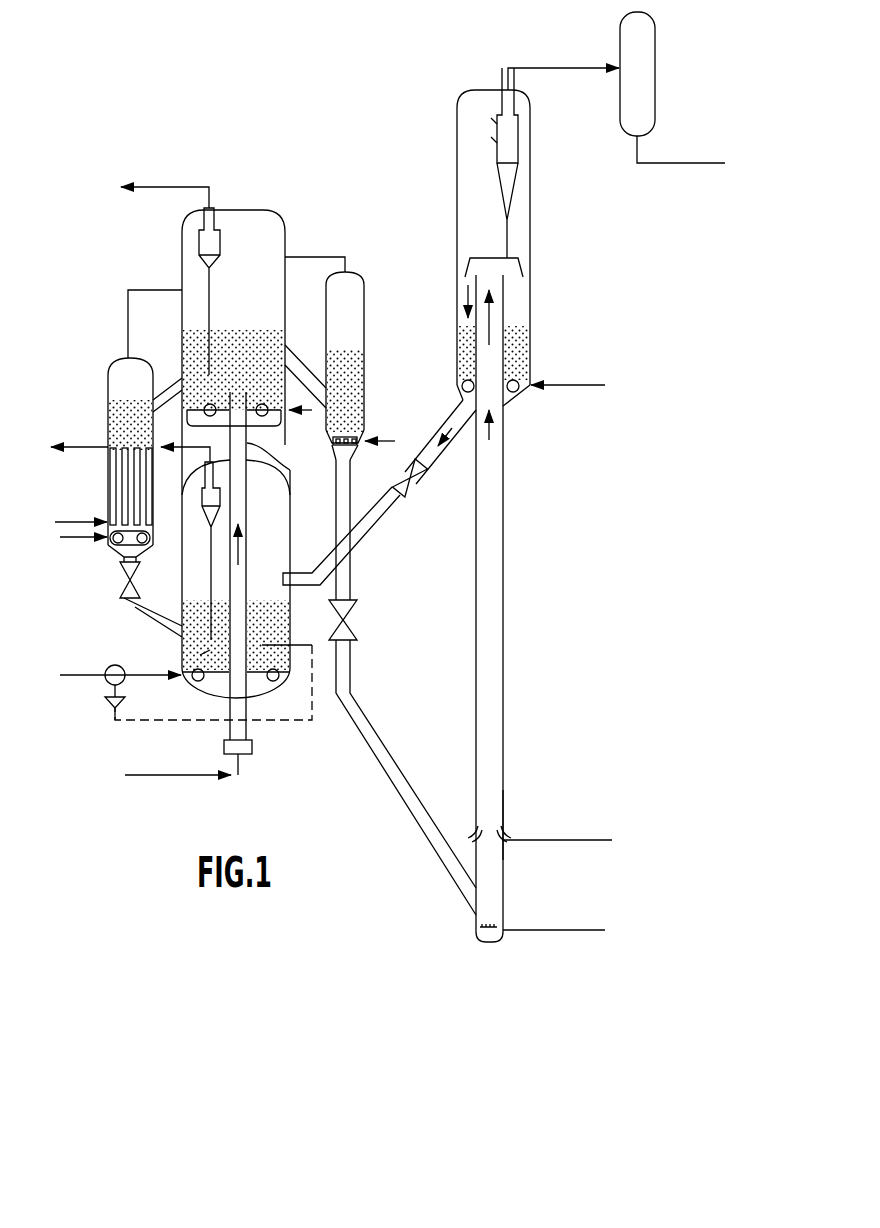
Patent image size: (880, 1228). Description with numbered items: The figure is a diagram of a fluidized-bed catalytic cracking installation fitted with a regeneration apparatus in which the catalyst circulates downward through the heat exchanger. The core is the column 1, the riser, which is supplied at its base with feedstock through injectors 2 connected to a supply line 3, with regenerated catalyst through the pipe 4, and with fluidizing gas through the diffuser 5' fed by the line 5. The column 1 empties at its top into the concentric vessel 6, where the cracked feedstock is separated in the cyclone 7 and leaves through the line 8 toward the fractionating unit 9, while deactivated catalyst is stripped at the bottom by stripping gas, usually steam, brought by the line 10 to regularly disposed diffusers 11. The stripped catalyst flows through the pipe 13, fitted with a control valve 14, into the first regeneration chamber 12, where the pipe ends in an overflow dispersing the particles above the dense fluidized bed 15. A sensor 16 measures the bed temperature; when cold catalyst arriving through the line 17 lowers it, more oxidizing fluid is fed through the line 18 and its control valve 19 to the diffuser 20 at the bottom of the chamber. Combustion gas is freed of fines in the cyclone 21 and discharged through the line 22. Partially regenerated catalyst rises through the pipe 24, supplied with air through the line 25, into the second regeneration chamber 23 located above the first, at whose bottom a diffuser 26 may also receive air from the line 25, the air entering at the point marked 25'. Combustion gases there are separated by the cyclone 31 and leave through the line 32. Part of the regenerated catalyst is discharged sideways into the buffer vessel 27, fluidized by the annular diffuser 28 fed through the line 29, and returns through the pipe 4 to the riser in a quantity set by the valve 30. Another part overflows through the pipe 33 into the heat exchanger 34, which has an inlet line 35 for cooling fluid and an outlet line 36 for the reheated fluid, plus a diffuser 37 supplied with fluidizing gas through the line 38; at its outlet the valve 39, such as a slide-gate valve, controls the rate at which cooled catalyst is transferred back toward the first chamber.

The column 1 is at (503, 577).
The injectors 2 is at (522, 821).
The supply line 3 is at (568, 842).
The pipe 4 is at (428, 832).
The line 5 is at (554, 909).
The diffuser 5' is at (504, 953).
The vessel 6 is at (530, 282).
The cyclone 7 is at (518, 140).
The line 8 is at (579, 67).
The fractionating unit 9 is at (655, 75).
The line 10 is at (565, 388).
The diffusers 11 is at (518, 370).
The first regeneration chamber 12 is at (290, 540).
The pipe 13 is at (458, 436).
The control valve 14 is at (412, 486).
The dense fluidized bed 15 is at (200, 657).
The sensor 16 is at (302, 645).
The line 17 is at (148, 611).
The line 18 is at (140, 677).
The control valve 19 is at (107, 688).
The diffuser 20 is at (296, 680).
The cyclone 21 is at (202, 496).
The line 22 is at (200, 450).
The second regeneration chamber 23 is at (287, 306).
The pipe 24 is at (290, 470).
The line 25 is at (188, 603).
The gas inlet 25' is at (312, 432).
The diffuser 26 is at (292, 388).
The buffer vessel 27 is at (364, 370).
The annular diffuser 28 is at (358, 425).
The line 29 is at (385, 443).
The valve 30 is at (348, 622).
The cyclone 31 is at (202, 243).
The line 32 is at (192, 186).
The pipe 33 is at (175, 372).
The heat exchanger 34 is at (126, 480).
The inlet line 35 is at (85, 522).
The outlet line 36 is at (90, 450).
The diffuser 37 is at (112, 548).
The line 38 is at (78, 545).
The valve 39 is at (120, 582).